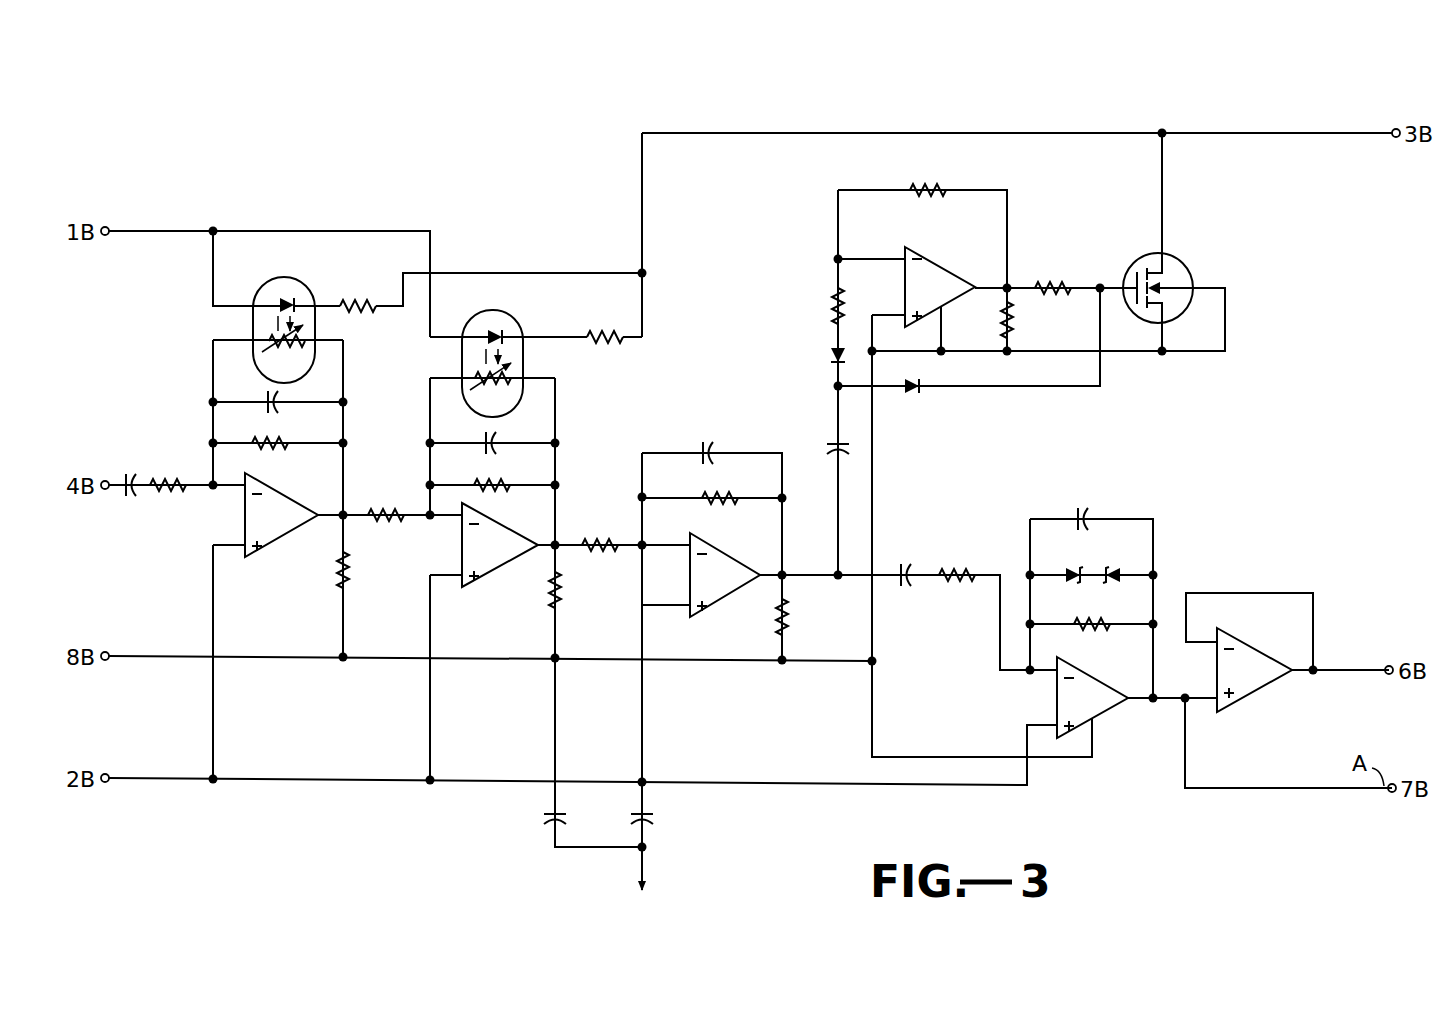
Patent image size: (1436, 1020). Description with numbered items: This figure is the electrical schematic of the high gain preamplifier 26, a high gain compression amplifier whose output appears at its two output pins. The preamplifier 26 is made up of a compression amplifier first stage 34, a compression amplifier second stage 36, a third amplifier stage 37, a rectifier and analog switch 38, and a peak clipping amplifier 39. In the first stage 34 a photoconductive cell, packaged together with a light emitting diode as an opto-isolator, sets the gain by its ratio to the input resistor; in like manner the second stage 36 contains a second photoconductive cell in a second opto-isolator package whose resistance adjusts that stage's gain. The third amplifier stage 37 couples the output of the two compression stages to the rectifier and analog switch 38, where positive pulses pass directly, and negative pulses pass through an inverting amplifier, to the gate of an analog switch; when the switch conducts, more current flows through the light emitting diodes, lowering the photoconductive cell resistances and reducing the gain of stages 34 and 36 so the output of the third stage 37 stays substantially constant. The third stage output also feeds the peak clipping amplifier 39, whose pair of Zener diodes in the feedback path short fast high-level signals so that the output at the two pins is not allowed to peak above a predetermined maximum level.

The high gain preamplifier 26 is at (730, 820).
The compression amplifier first stage 34 is at (353, 432).
The compression amplifier second stage 36 is at (562, 462).
The third amplifier stage 37 is at (786, 554).
The rectifier and analog switch 38 is at (812, 353).
The peak clipping amplifier 39 is at (1168, 585).